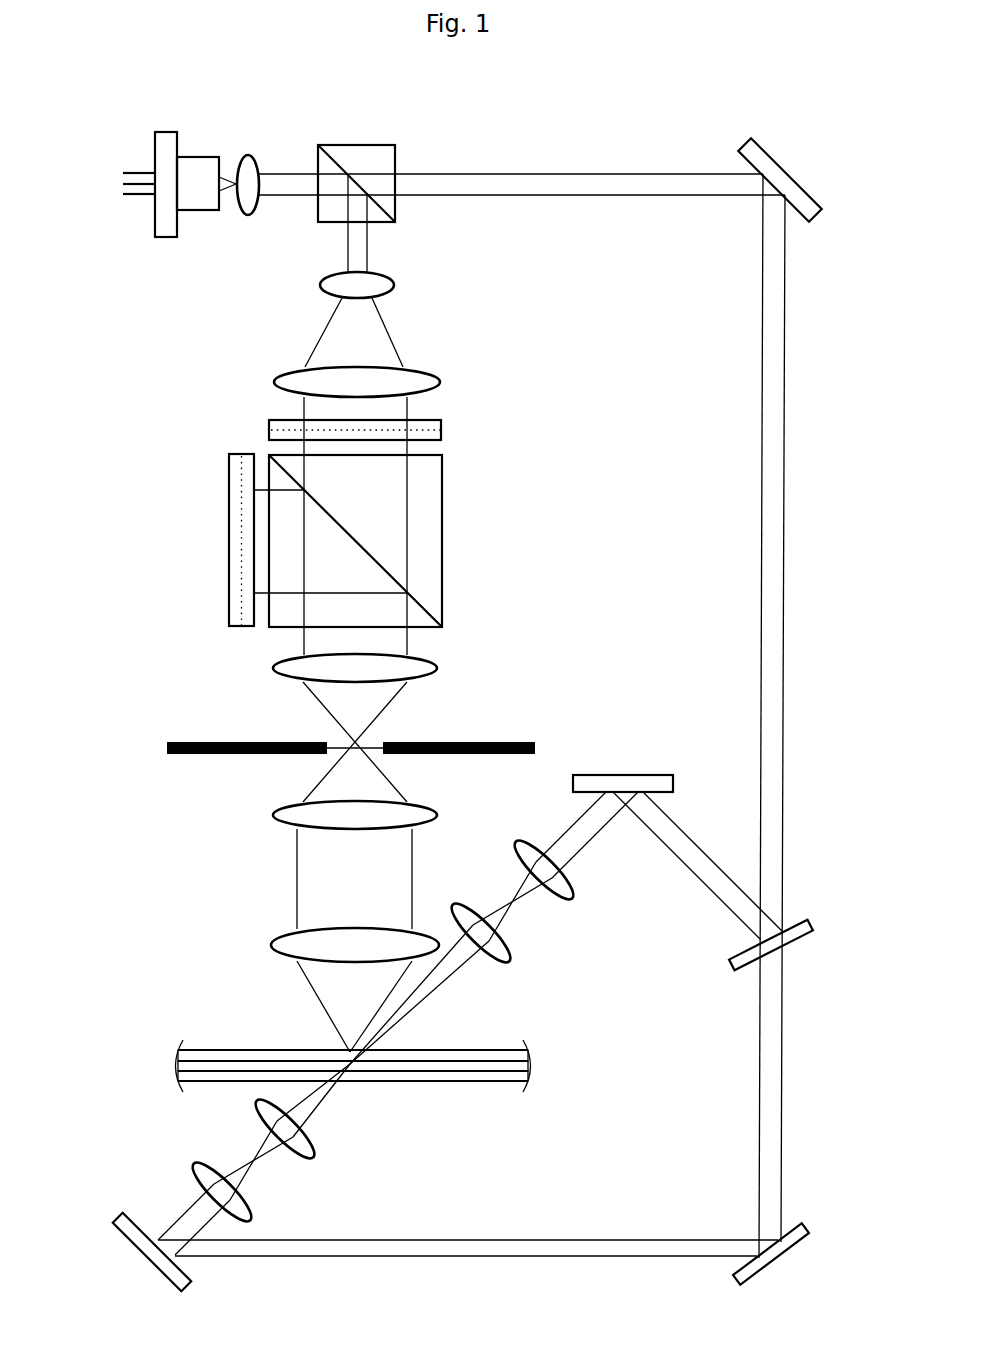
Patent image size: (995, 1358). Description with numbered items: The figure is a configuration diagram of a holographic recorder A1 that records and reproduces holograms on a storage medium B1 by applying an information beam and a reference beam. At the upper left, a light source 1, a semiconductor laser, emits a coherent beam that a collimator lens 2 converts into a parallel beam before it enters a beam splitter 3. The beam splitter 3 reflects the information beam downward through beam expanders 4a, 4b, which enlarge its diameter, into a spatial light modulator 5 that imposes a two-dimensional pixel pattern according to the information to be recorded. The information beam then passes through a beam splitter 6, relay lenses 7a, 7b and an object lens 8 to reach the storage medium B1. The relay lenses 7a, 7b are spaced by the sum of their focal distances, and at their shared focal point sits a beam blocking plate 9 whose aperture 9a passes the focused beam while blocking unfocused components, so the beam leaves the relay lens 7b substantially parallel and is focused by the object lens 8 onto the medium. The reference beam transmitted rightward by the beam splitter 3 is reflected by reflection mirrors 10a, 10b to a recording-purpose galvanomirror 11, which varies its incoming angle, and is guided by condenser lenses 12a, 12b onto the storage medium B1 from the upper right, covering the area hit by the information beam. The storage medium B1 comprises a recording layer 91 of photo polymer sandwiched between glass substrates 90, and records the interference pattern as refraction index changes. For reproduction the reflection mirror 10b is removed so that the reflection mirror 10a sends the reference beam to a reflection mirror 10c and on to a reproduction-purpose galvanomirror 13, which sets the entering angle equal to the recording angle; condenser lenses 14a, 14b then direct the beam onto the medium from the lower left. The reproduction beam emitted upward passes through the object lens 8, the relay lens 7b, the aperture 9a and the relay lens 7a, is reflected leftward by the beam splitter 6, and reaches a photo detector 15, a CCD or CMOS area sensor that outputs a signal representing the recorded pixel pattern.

The holographic recorder A1 is at (80, 112).
The light source 1 is at (163, 132).
The collimator lens 2 is at (250, 157).
The beam splitter 3 is at (350, 145).
The beam expander 4a is at (322, 288).
The beam expander 4b is at (276, 380).
The spatial light modulator 5 is at (441, 430).
The beam splitter 6 is at (442, 530).
The photo detector 15 is at (229, 465).
The relay lens 7a is at (275, 667).
The relay lens 7b is at (275, 815).
The object lens 8 is at (272, 945).
The beam blocking plate 9 is at (462, 742).
The aperture 9a is at (381, 745).
The reflection mirror 10a is at (786, 165).
The reflection mirror 10b is at (800, 935).
The reflection mirror 10c is at (797, 1245).
The recording-purpose galvanomirror 11 is at (660, 775).
The condenser lens 12a is at (576, 896).
The condenser lens 12b is at (512, 957).
The reproduction-purpose galvanomirror 13 is at (190, 1283).
The condenser lens 14a is at (196, 1166).
The condenser lens 14b is at (257, 1103).
The substrate 90 is at (529, 1054).
The recording layer 91 is at (529, 1066).
The storage medium B1 is at (403, 1102).